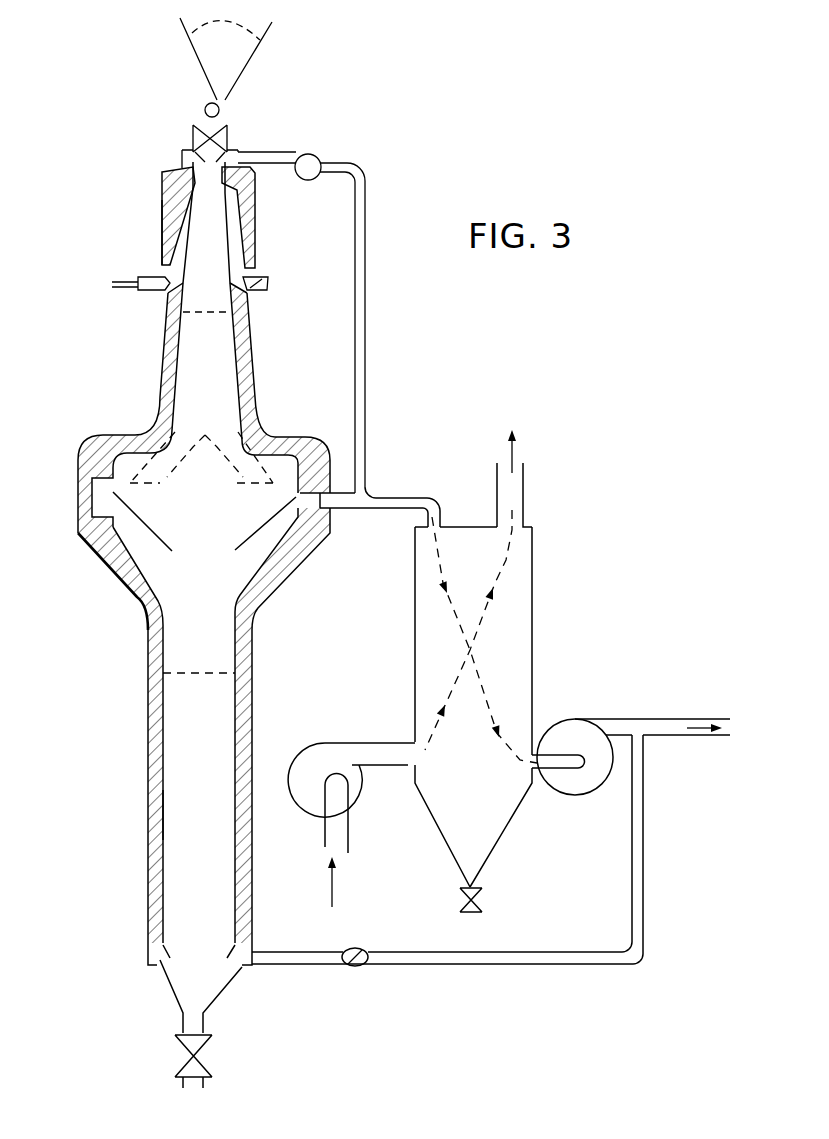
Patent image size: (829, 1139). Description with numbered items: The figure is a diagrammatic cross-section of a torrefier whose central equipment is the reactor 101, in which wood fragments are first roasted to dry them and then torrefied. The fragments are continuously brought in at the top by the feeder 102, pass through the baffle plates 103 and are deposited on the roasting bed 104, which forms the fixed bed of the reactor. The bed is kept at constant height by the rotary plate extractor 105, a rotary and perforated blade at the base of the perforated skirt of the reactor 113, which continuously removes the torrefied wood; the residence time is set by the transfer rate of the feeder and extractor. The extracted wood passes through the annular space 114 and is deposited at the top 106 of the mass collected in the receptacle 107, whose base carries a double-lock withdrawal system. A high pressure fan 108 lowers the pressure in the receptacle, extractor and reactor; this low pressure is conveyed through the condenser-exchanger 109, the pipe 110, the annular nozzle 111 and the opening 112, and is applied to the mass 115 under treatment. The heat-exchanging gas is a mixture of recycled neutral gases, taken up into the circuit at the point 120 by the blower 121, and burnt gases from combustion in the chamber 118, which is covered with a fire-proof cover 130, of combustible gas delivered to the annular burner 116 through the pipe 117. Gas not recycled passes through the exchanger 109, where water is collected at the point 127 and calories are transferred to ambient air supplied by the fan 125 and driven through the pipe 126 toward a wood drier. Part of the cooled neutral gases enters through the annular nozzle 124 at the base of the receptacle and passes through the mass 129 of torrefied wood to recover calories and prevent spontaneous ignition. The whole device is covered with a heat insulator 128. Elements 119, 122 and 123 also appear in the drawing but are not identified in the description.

The reactor 101 is at (247, 323).
The feeder 102 is at (205, 105).
The baffle plates 103 is at (193, 133).
The roasting bed 104 is at (190, 323).
The rotary plate extractor 105 is at (157, 425).
The top of the collected mass 106 is at (180, 678).
The receptacle 107 is at (160, 765).
The high pressure fan 108 is at (573, 740).
The condenser-exchanger 109 is at (527, 533).
The pipe 110 is at (335, 505).
The annular nozzle 111 is at (307, 560).
The opening 112 is at (260, 607).
The reactor skirt 113 is at (245, 473).
The annular space 114 is at (293, 440).
The mass in the course of treatment 115 is at (208, 380).
The annular burner 116 is at (263, 278).
The pipe 117 is at (113, 282).
The combustion chamber 118 is at (237, 237).
The left nozzle block 119 is at (187, 192).
The recycled gas take-up point 120 is at (352, 503).
The blower 121 is at (312, 162).
The return pipe 122 is at (471, 866).
The return valve 123 is at (357, 965).
The annular nozzle 124 is at (167, 977).
The fan 125 is at (351, 809).
The pipe 126 is at (517, 472).
The water collection point 127 is at (478, 893).
The heat insulator 128 is at (115, 577).
The mass of torrefied wood 129 is at (183, 813).
The fire-proof cover 130 is at (162, 228).